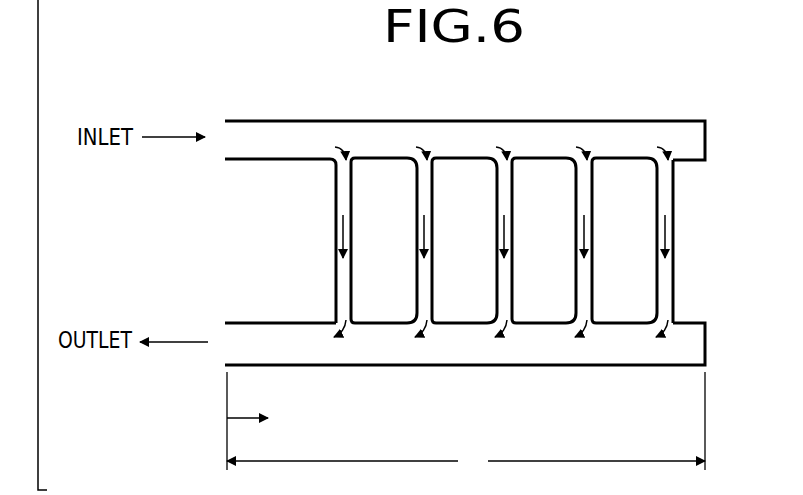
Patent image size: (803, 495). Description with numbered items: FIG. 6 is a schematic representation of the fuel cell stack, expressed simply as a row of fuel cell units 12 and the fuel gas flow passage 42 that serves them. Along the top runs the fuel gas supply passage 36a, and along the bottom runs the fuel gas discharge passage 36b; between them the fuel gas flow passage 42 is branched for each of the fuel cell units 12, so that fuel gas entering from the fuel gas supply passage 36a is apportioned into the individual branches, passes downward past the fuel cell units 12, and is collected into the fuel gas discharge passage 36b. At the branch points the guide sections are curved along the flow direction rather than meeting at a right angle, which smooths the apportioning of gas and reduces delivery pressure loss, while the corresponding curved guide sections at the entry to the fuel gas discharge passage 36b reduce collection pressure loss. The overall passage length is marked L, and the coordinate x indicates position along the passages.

The fuel cell unit 12 is at (397, 250).
The fuel gas supply passage 36a is at (545, 132).
The fuel gas discharge passage 36b is at (534, 350).
The fuel gas flow passage 42 is at (336, 276).
The header length L is at (466, 425).
The x coordinate axis x is at (255, 418).